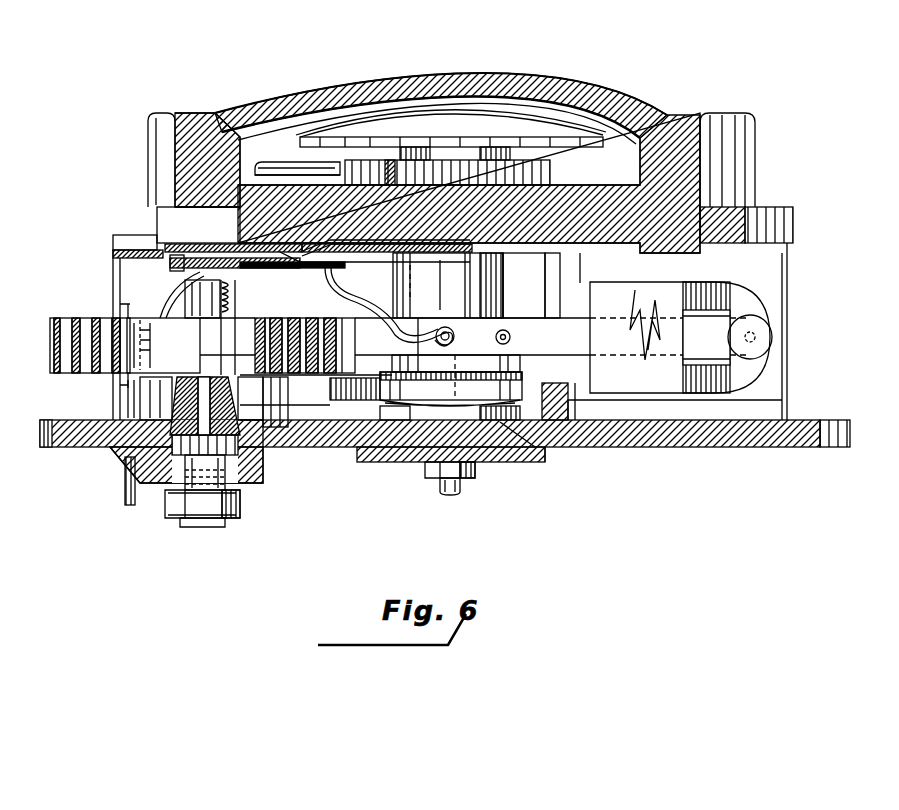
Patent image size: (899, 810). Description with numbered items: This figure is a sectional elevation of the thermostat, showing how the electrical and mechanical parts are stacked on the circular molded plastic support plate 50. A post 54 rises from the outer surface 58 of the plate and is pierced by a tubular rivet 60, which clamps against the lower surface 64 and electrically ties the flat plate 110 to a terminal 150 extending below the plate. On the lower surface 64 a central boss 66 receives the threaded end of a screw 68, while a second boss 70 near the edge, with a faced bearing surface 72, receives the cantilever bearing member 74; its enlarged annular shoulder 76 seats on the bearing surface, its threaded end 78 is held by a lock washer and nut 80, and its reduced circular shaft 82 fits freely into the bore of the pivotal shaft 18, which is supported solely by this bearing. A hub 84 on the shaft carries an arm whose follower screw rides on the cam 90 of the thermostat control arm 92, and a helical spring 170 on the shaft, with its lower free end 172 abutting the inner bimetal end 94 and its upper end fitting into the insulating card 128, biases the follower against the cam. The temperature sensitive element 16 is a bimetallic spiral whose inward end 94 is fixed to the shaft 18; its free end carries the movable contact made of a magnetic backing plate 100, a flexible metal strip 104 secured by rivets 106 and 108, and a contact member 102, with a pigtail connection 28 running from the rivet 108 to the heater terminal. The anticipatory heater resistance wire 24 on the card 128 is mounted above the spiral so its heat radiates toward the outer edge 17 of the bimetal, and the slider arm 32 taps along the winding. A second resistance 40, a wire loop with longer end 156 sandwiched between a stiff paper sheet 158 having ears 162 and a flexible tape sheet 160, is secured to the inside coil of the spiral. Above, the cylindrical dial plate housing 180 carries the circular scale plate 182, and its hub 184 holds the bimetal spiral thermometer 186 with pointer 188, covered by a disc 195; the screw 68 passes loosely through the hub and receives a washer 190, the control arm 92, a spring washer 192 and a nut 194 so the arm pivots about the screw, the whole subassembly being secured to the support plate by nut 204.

The temperature sensitive element 16 is at (48, 332).
The outer edge of bimetal element 17 is at (306, 317).
The shaft 18 is at (226, 350).
The resistance wire 24 is at (302, 268).
The pigtail connection 28 is at (358, 306).
The first arm 32 is at (248, 243).
The resistance 40 is at (252, 301).
The support plate 50 is at (40, 437).
The post 54 is at (112, 278).
The outer surface 58 is at (814, 420).
The tubular rivet 60 is at (118, 236).
The lower surface 64 is at (336, 448).
The boss 66 is at (528, 462).
The screw 68 is at (448, 495).
The second boss 70 is at (276, 470).
The bearing surface 72 is at (250, 440).
The cantilever bearing member 74 is at (180, 505).
The enlarged annular shoulder 76 is at (128, 452).
The threaded end 78 is at (208, 527).
The nut 80 is at (241, 510).
The circular shaft 82 is at (222, 384).
The hub 84 is at (142, 395).
The cam 90 is at (290, 395).
The thermostat control arm 92 is at (525, 388).
The end of bimetal 94 is at (163, 345).
The backing plate 100 is at (663, 290).
The contact member 102 is at (760, 336).
The flexible metal strip 104 is at (705, 310).
The rivet 106 is at (508, 330).
The rivet 108 is at (456, 338).
The flat plate 110 is at (363, 247).
The sheet of insulating material 128 is at (194, 248).
The terminal 150 is at (124, 484).
The longer end 156 is at (176, 285).
The sheet of insulating paper 158 is at (268, 325).
The sheet of insulating paper 160 is at (290, 306).
The ears 162 is at (120, 306).
The helical spring 170 is at (180, 268).
The lower free end 172 is at (156, 336).
The dial plate housing 180 is at (752, 142).
The circular scale plate 182 is at (283, 158).
The hub 184 is at (504, 270).
The bimetal spiral thermometer 186 is at (552, 170).
The thermometer pointer 188 is at (300, 147).
The washer 190 is at (512, 372).
The spring washer 192 is at (527, 422).
The nut 194 is at (380, 412).
The disc 195 is at (468, 95).
The nut 204 is at (428, 472).